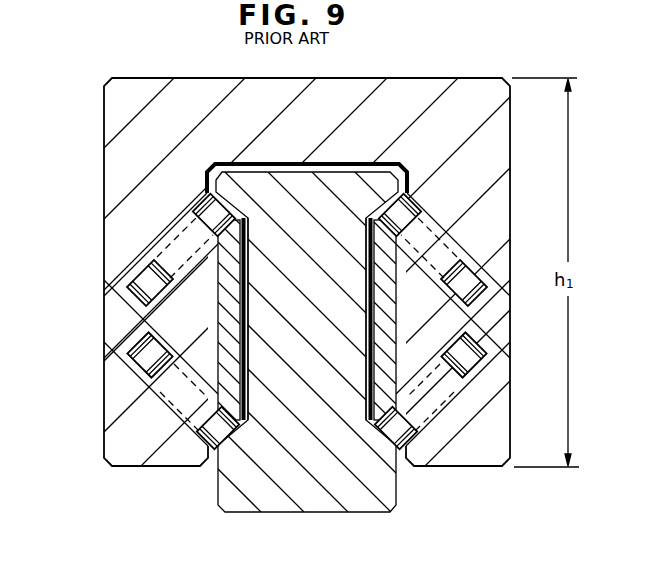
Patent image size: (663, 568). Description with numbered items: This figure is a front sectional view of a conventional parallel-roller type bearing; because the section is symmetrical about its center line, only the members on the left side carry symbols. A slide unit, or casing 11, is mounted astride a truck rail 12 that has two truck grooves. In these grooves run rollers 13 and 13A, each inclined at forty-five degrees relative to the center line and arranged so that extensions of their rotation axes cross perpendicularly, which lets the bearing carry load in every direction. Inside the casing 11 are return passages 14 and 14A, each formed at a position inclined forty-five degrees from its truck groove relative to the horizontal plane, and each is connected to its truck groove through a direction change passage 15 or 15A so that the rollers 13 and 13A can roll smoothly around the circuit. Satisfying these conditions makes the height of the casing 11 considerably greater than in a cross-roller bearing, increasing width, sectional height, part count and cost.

The slide unit 11 is at (125, 174).
The truck rail 12 is at (224, 488).
The roller 13 is at (226, 205).
The roller 13A is at (228, 433).
The return passage 14 is at (133, 290).
The return passage 14A is at (130, 368).
The direction change passage 15 is at (157, 257).
The direction change passage 15A is at (160, 392).